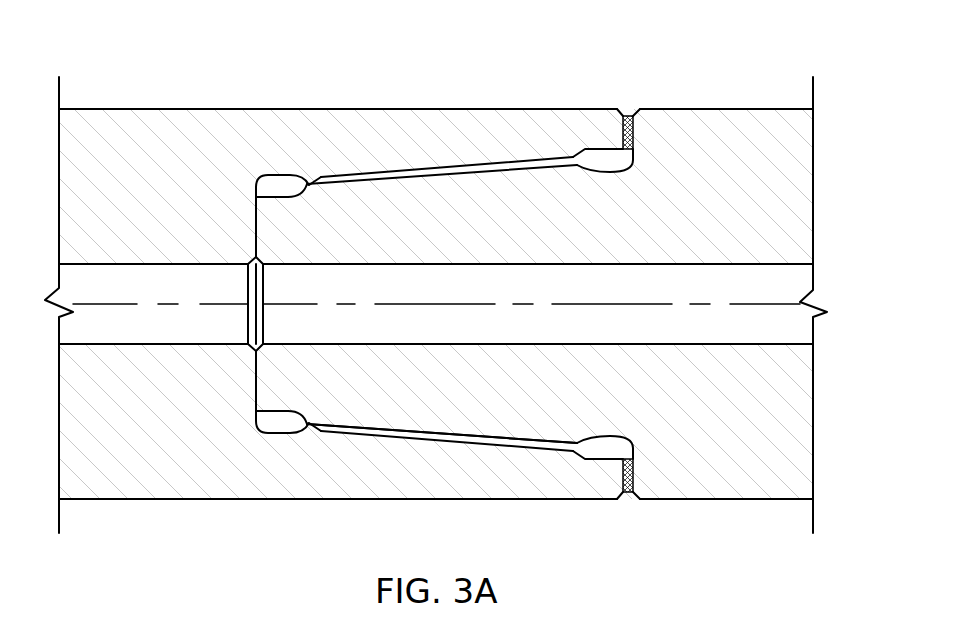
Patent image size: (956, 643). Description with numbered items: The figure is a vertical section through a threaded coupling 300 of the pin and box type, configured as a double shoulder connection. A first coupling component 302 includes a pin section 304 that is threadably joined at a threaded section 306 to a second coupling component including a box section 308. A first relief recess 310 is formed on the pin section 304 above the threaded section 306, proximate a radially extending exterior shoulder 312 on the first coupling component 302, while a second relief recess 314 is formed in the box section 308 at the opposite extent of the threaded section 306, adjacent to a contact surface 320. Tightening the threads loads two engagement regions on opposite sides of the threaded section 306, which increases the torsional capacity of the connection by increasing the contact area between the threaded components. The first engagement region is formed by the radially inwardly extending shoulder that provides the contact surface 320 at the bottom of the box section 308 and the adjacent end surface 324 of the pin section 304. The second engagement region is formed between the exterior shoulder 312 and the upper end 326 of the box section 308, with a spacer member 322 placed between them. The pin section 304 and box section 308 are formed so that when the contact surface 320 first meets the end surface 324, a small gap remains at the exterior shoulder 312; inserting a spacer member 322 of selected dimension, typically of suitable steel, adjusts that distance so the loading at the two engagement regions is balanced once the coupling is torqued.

The threaded coupling 300 is at (140, 38).
The first coupling component 302 is at (738, 479).
The pin section 304 is at (495, 415).
The threaded section 306 is at (383, 433).
The box section 308 is at (148, 483).
The first relief recess 310 is at (613, 165).
The exterior shoulder 312 is at (637, 453).
The second relief recess 314 is at (278, 425).
The contact surface 320 is at (256, 384).
The spacer member 322 is at (635, 130).
The end surface 324 is at (258, 221).
The upper end 326 is at (622, 478).